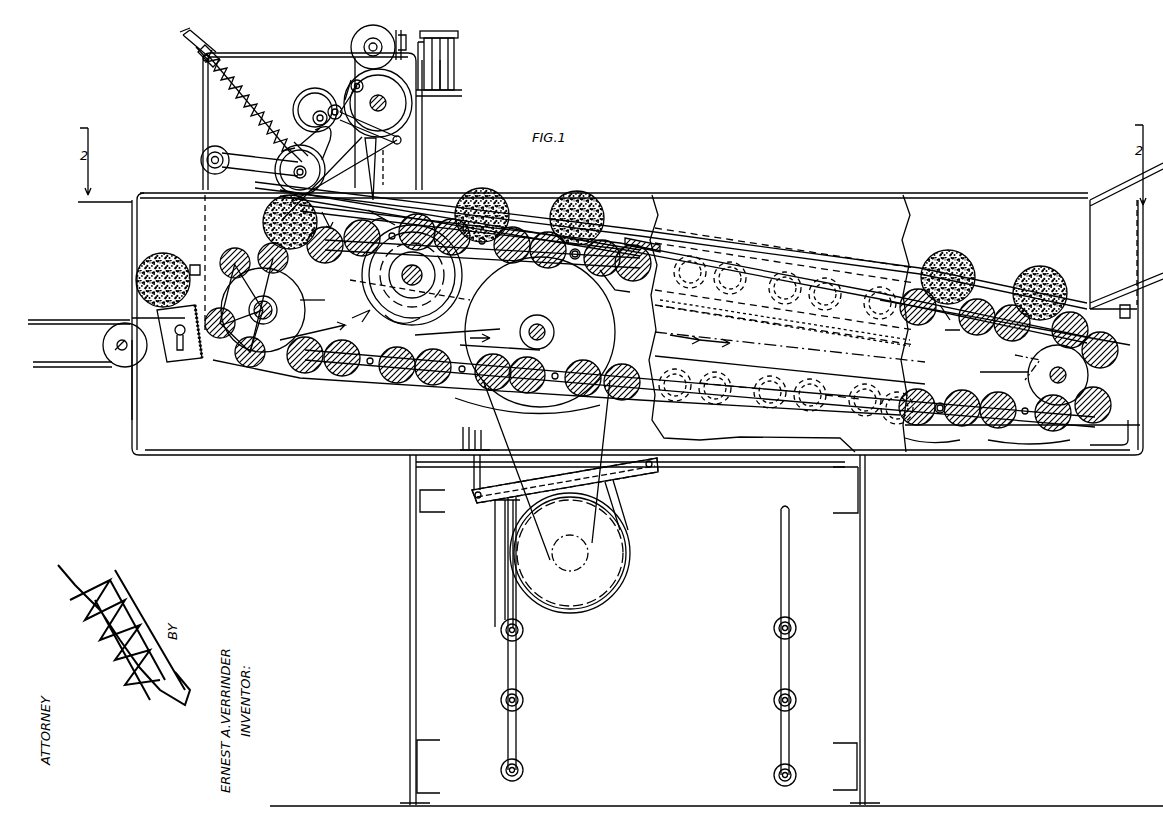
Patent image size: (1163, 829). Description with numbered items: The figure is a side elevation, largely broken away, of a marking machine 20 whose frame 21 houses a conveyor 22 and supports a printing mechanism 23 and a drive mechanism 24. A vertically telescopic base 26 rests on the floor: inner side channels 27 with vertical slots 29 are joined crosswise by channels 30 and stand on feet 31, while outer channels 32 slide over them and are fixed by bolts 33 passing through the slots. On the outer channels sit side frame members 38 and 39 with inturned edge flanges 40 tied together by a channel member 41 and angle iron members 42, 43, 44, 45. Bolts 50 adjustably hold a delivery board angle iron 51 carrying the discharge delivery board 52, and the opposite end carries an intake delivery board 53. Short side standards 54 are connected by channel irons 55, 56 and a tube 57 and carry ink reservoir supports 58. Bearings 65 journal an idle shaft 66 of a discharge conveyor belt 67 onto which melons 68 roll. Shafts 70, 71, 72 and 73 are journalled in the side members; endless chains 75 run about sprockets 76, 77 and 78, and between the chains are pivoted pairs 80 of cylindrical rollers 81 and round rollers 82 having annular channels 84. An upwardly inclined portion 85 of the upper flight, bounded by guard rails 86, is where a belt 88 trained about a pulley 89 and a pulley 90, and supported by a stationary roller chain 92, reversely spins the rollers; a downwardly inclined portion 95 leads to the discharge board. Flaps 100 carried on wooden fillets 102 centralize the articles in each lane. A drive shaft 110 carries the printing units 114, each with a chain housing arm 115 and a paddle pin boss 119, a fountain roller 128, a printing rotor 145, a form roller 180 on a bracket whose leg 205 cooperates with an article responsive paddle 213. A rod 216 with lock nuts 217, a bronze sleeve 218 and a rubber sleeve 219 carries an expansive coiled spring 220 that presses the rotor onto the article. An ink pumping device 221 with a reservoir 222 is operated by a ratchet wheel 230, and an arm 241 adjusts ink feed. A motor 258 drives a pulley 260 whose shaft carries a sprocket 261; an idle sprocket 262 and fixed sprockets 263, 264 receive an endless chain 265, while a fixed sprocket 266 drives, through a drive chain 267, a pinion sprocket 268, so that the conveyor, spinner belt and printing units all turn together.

The marking machine 20 is at (726, 96).
The frame 21 is at (806, 190).
The conveyor 22 is at (991, 272).
The printing mechanism 23 is at (463, 115).
The drive mechanism 24 is at (646, 534).
The vertically telescopic base 26 is at (853, 571).
The inner side channels 27 is at (848, 702).
The vertical slots 29 is at (516, 652).
The channels 30 is at (445, 500).
The feet 31 is at (873, 805).
The outer channels 32 is at (410, 482).
The bolts 33 is at (522, 628).
The side frame member 38 is at (920, 200).
The side frame member 39 is at (905, 193).
The inturned edge flanges 40 is at (642, 193).
The channel member 41 is at (140, 412).
The angle iron member 42 is at (458, 438).
The angle iron member 43 is at (660, 475).
The angle iron member 44 is at (1128, 428).
The angle iron member 45 is at (1136, 314).
The bolts 50 is at (180, 355).
The delivery board angle iron 51 is at (197, 350).
The discharge delivery board 52 is at (140, 318).
The intake delivery board 53 is at (1100, 300).
The short side standards 54 is at (215, 130).
The channel iron 55 is at (203, 78).
The channel iron 56 is at (422, 140).
The tube 57 is at (228, 150).
The angle iron ink reservoir supports 58 is at (455, 96).
The bearings 65 is at (117, 355).
The idle shaft 66 is at (118, 345).
The discharge conveyor belt 67 is at (68, 315).
The melons 68 is at (163, 253).
The shaft 70 is at (275, 310).
The shaft 71 is at (412, 272).
The shaft 72 is at (545, 326).
The shaft 73 is at (1050, 375).
The endless chains 75 is at (950, 318).
The sprocket 76 is at (300, 290).
The sprocket 77 is at (359, 313).
The sprocket 78 is at (1004, 371).
The pairs of rollers 80 is at (1022, 438).
The rollers 81 is at (577, 262).
The rollers 82 is at (548, 268).
The annular channels 84 is at (258, 258).
The upwardly inclined portion 85 is at (628, 240).
The guard rails 86 is at (925, 285).
The belt 88 is at (620, 287).
The pulley 89 is at (1019, 361).
The pulley 90 is at (445, 272).
The stationary section of roller chain 92 is at (765, 315).
The downwardly inclined portion 95 is at (331, 211).
The flaps 100 is at (364, 216).
The wooden fillets 102 is at (430, 205).
The printing mechanism drive shaft 110 is at (352, 84).
The printing units 114 is at (360, 169).
The chain housing arm 115 is at (314, 170).
The paddle pin boss 119 is at (315, 90).
The fountain roller 128 is at (410, 97).
The printing rotor 145 is at (288, 184).
The form roller 180 is at (312, 118).
The leg 205 is at (362, 124).
The article responsive paddle 213 is at (369, 210).
The rod 216 is at (243, 90).
The lock nuts 217 is at (180, 40).
The bronze sleeve 218 is at (222, 55).
The rubber sleeve 219 is at (195, 58).
The expansive coiled spring 220 is at (245, 102).
The ink pumping device 221 is at (463, 56).
The ink reservoir 222 is at (456, 70).
The ratchet wheel 230 is at (360, 40).
The arm 241 is at (355, 78).
The motor 258 is at (612, 577).
The pulley 260 is at (538, 410).
The sprocket 261 is at (522, 330).
The idle sprocket 262 is at (319, 330).
The fixed sprocket 263 is at (470, 300).
The fixed sprocket 264 is at (387, 167).
The endless chain 265 is at (448, 347).
The fixed sprocket 266 is at (321, 297).
The drive chain 267 is at (393, 325).
The pinion sprocket 268 is at (462, 277).